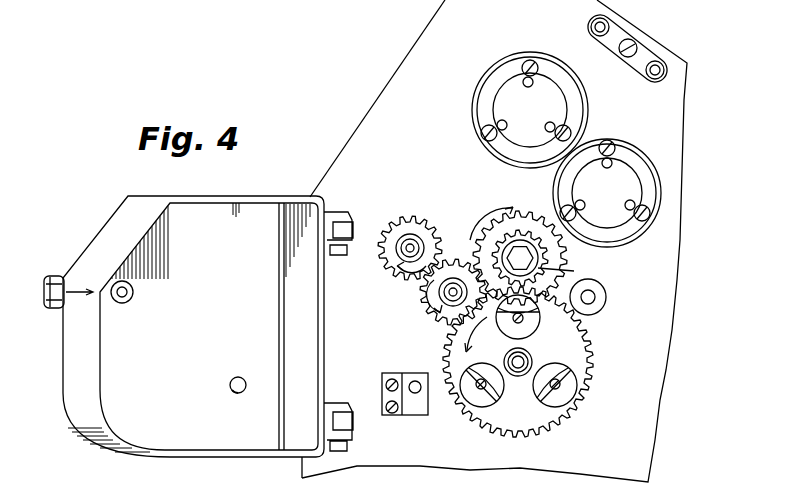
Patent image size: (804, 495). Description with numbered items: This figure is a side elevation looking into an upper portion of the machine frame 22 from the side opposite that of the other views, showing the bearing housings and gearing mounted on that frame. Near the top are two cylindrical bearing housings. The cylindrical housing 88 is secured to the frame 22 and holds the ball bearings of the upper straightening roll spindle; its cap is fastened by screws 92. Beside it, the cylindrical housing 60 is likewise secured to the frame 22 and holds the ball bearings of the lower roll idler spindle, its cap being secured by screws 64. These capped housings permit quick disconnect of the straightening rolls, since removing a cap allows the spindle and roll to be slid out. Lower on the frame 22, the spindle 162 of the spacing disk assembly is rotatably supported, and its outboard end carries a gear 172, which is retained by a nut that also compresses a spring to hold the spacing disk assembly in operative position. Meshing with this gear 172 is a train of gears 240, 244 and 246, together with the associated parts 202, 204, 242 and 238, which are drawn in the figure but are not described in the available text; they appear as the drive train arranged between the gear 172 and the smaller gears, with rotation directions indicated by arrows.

The frame 22 is at (677, 280).
The cylindrical housing 60 is at (652, 164).
The screws 64 is at (616, 146).
The cylindrical housing 88 is at (580, 85).
The screws 92 is at (484, 138).
The spindle 162 is at (515, 378).
The gear 172 is at (592, 342).
The shaft 202 is at (406, 249).
The shaft 204 is at (445, 313).
The roller 238 is at (584, 279).
The gear 240 is at (503, 252).
The shaft 242 is at (574, 271).
The gear 244 is at (430, 309).
The gear 246 is at (418, 218).